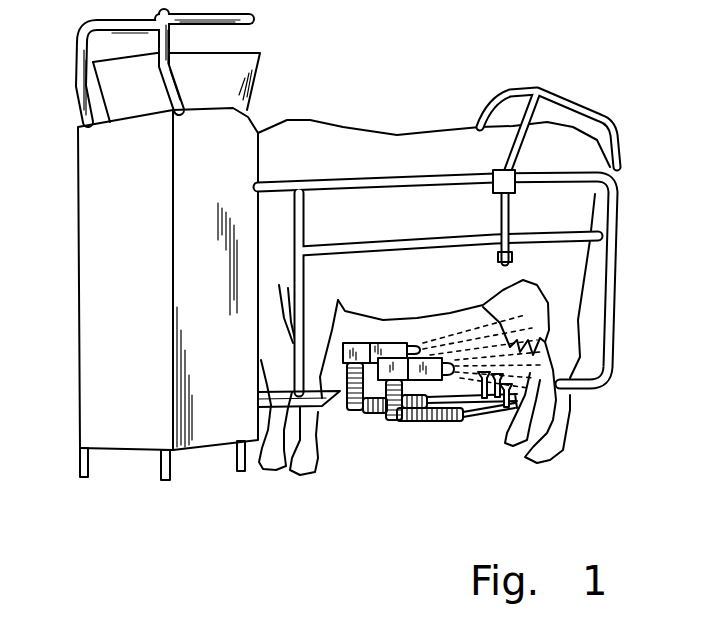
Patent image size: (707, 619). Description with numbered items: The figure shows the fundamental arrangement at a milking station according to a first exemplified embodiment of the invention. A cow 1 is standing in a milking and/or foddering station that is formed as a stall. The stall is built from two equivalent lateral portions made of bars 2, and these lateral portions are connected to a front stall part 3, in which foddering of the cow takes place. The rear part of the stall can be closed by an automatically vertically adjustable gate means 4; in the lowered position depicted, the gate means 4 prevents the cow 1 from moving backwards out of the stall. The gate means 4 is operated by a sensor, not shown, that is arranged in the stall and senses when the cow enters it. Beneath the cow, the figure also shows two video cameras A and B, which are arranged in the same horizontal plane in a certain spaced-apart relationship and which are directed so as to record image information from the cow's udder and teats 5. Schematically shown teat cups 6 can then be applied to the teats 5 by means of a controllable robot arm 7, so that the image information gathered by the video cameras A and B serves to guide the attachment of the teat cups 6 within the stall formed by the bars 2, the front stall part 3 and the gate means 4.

The cow 1 is at (392, 145).
The bars 2 is at (607, 208).
The front stall part 3 is at (92, 297).
The gate means 4 is at (572, 98).
The udder and teats 5 is at (537, 347).
The teat cups 6 is at (518, 396).
The robot arm 7 is at (462, 423).
The video camera A is at (358, 404).
The video camera B is at (396, 424).